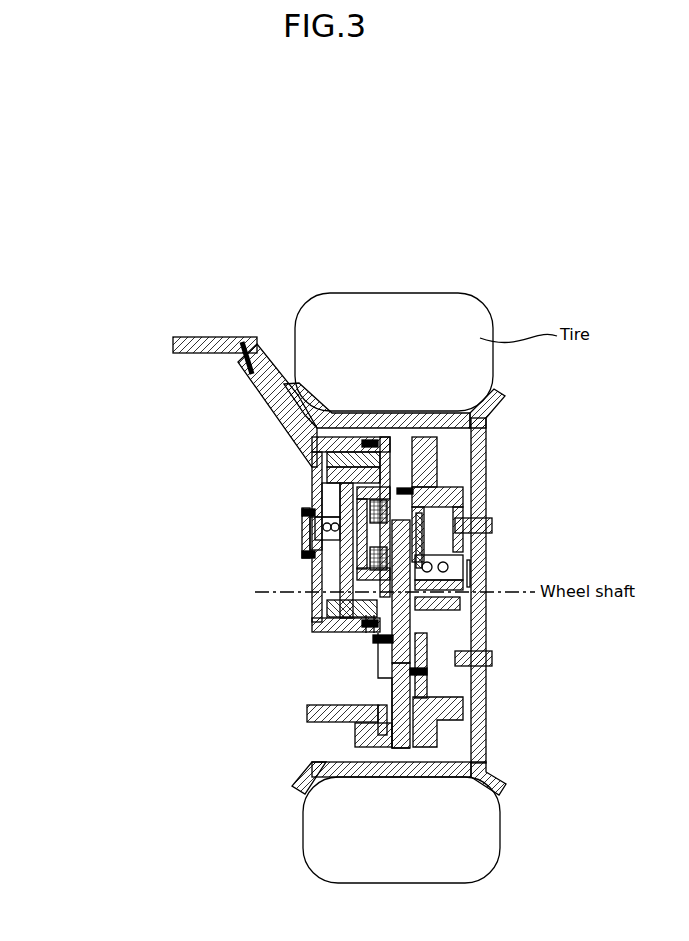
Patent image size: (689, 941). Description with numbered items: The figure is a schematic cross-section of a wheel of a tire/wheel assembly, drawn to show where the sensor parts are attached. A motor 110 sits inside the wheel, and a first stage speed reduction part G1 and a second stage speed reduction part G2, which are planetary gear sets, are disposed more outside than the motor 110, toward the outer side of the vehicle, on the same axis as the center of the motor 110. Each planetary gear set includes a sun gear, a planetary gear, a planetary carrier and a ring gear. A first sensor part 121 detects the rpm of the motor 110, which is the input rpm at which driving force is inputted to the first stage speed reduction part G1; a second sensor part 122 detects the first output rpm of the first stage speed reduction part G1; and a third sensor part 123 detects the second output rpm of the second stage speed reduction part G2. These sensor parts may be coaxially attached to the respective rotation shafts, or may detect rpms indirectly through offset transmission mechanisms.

The motor 110 is at (333, 472).
The first sensor part 121 is at (305, 545).
The second sensor part 122 is at (440, 518).
The third sensor part 123 is at (363, 628).
The first stage speed reduction part G1 is at (330, 590).
The second stage speed reduction part G2 is at (373, 657).